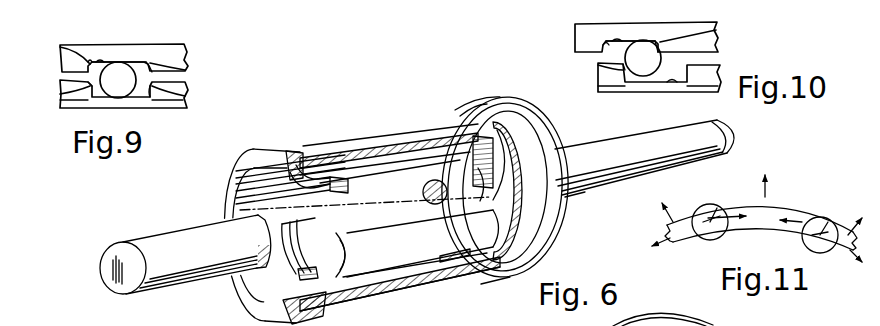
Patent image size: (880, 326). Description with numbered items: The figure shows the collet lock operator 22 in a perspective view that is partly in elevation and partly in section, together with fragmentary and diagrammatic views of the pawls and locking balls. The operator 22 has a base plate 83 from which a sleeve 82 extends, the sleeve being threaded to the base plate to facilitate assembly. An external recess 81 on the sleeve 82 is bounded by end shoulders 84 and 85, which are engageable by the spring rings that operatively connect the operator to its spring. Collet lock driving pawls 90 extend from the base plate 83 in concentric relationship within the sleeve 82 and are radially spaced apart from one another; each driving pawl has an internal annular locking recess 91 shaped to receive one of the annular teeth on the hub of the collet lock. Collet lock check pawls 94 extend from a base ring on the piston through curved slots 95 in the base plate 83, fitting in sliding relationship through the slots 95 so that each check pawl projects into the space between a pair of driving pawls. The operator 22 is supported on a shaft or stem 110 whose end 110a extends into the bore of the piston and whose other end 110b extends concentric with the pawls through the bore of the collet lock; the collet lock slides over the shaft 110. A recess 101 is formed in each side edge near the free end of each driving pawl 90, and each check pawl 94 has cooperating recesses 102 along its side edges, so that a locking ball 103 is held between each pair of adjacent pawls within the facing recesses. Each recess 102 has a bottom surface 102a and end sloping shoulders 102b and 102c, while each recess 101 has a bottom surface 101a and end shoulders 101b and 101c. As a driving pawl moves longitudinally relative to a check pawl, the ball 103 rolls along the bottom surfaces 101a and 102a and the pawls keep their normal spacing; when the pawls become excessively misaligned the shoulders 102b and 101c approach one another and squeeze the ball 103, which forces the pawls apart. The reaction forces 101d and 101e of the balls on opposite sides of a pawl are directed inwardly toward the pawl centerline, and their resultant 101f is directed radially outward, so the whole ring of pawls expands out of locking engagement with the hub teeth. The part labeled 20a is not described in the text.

In FIG. 6, the gear housing portion 20a is at (502, 319).
In FIG. 6, the collet lock operator 22 is at (549, 100).
In FIG. 6, the external recess 81 is at (338, 150).
In FIG. 6, the sleeve 82 is at (415, 147).
In FIG. 6, the base plate 83 is at (564, 226).
In FIG. 6, the end shoulder 84 is at (320, 150).
In FIG. 6, the end shoulder 85 is at (482, 114).
In FIG. 9, the collet lock driving pawls 90 is at (62, 58).
In FIG. 10, the collet lock driving pawls 90 is at (567, 10).
In FIG. 11, the collet lock driving pawls 90 is at (770, 232).
In FIG. 6, the collet lock driving pawls 90 is at (388, 168).
In FIG. 6, the internal annular locking recess 91 is at (288, 222).
In FIG. 9, the collet lock check pawls 94 is at (63, 92).
In FIG. 10, the collet lock check pawls 94 is at (600, 80).
In FIG. 11, the collet lock check pawls 94 is at (680, 244).
In FIG. 6, the curved slots 95 is at (437, 167).
In FIG. 9, the recess 101 is at (111, 60).
In FIG. 10, the recess 101 is at (656, 40).
In FIG. 6, the recess 101 is at (378, 236).
In FIG. 9, the bottom surface 101a is at (99, 61).
In FIG. 10, the bottom surface 101a is at (616, 40).
In FIG. 9, the end shoulder 101b is at (88, 48).
In FIG. 10, the end shoulder 101b is at (606, 40).
In FIG. 9, the end shoulder 101c is at (155, 58).
In FIG. 10, the end shoulder 101c is at (659, 51).
In FIG. 11, the reaction force 101d is at (716, 210).
In FIG. 11, the reaction force 101e is at (830, 228).
In FIG. 11, the resultant force 101f is at (772, 196).
In FIG. 9, the cooperating recesses 102 is at (80, 88).
In FIG. 10, the cooperating recesses 102 is at (618, 70).
In FIG. 9, the bottom surface 102a is at (150, 103).
In FIG. 10, the bottom surface 102a is at (676, 90).
In FIG. 9, the end sloping shoulder 102b is at (82, 105).
In FIG. 10, the end sloping shoulder 102b is at (628, 88).
In FIG. 9, the end sloping shoulder 102c is at (184, 88).
In FIG. 10, the end sloping shoulder 102c is at (690, 65).
In FIG. 9, the locking ball 103 is at (120, 92).
In FIG. 10, the locking ball 103 is at (648, 60).
In FIG. 11, the locking ball 103 is at (724, 214).
In FIG. 6, the shaft or stem 110 is at (698, 163).
In FIG. 6, the shaft end 110a is at (606, 134).
In FIG. 6, the shaft end 110b is at (182, 289).